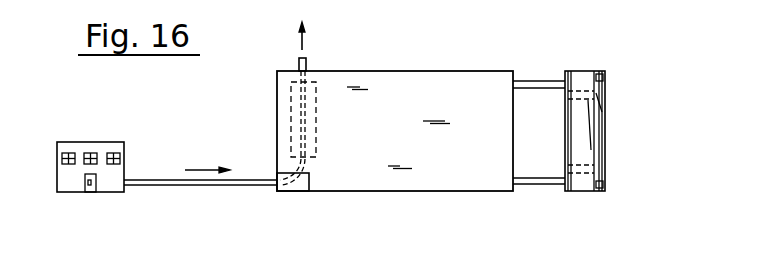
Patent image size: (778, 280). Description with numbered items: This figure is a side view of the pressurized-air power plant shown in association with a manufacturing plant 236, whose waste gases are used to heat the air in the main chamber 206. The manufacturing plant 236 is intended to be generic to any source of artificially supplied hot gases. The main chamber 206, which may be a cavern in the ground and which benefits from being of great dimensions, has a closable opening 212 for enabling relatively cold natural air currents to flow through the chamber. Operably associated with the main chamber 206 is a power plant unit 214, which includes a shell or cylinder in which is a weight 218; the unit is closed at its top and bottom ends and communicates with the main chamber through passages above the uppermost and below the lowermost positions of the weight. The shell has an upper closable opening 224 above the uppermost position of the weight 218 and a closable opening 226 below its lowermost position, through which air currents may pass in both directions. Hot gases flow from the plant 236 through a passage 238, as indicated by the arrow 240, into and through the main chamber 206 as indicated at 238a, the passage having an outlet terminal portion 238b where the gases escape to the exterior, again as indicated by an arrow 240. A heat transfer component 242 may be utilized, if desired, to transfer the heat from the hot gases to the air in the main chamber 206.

The main chamber 206 is at (462, 62).
The closable opening 212 is at (291, 180).
The power plant unit 214 is at (616, 135).
The weight 218 is at (606, 113).
The upper closable opening 224 is at (605, 78).
The closable opening 226 is at (606, 186).
The manufacturing plant 236 is at (85, 134).
The passage 238 is at (147, 180).
The passage portion within the main chamber 238a is at (305, 187).
The outlet terminal portion 238b is at (306, 62).
The arrow 240 is at (204, 168).
The heat transfer component 242 is at (313, 118).